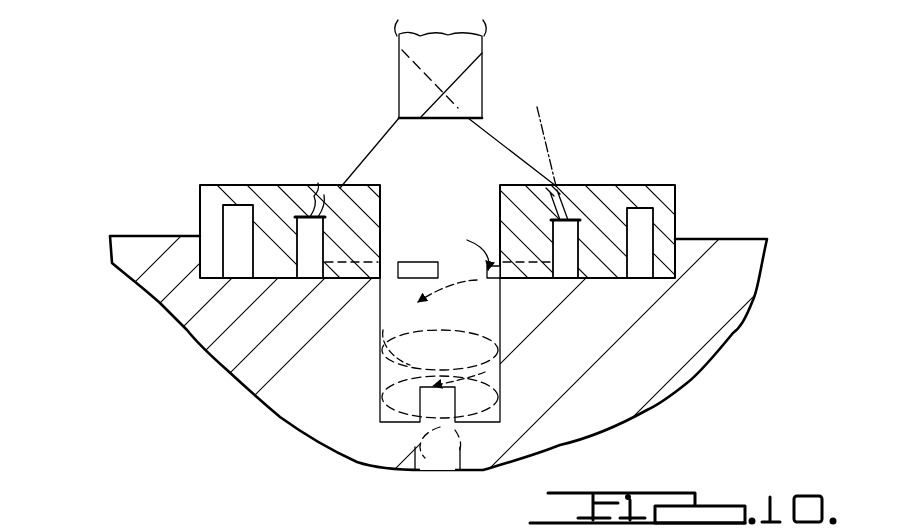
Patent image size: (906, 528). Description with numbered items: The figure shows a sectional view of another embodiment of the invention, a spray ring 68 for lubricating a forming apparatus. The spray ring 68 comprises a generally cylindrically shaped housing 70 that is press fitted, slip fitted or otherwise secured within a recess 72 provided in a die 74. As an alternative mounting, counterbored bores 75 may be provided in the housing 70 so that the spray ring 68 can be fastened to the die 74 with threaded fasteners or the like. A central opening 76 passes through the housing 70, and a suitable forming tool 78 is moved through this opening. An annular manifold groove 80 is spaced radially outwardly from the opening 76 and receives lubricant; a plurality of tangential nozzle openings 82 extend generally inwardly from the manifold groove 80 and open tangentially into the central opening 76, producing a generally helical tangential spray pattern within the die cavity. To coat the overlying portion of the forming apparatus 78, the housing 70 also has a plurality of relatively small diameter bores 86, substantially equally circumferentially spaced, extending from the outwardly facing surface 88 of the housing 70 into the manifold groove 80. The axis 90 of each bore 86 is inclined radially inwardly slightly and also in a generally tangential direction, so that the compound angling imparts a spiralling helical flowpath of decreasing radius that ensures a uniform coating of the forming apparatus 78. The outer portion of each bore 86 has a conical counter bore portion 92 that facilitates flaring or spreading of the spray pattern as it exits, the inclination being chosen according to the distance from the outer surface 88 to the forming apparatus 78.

The spray ring 68 is at (168, 188).
The housing 70 is at (284, 194).
The recess 72 is at (203, 258).
The die 74 is at (245, 376).
The counterbored bores 75 is at (242, 262).
The central opening 76 is at (489, 186).
The forming tool 78 is at (478, 82).
The annular manifold groove 80 is at (308, 273).
The tangential nozzle openings 82 is at (426, 265).
The bores 86 is at (306, 215).
The outwardly facing surface 88 is at (383, 172).
The axis 90 is at (548, 130).
The conical counter bore portion 92 is at (316, 198).